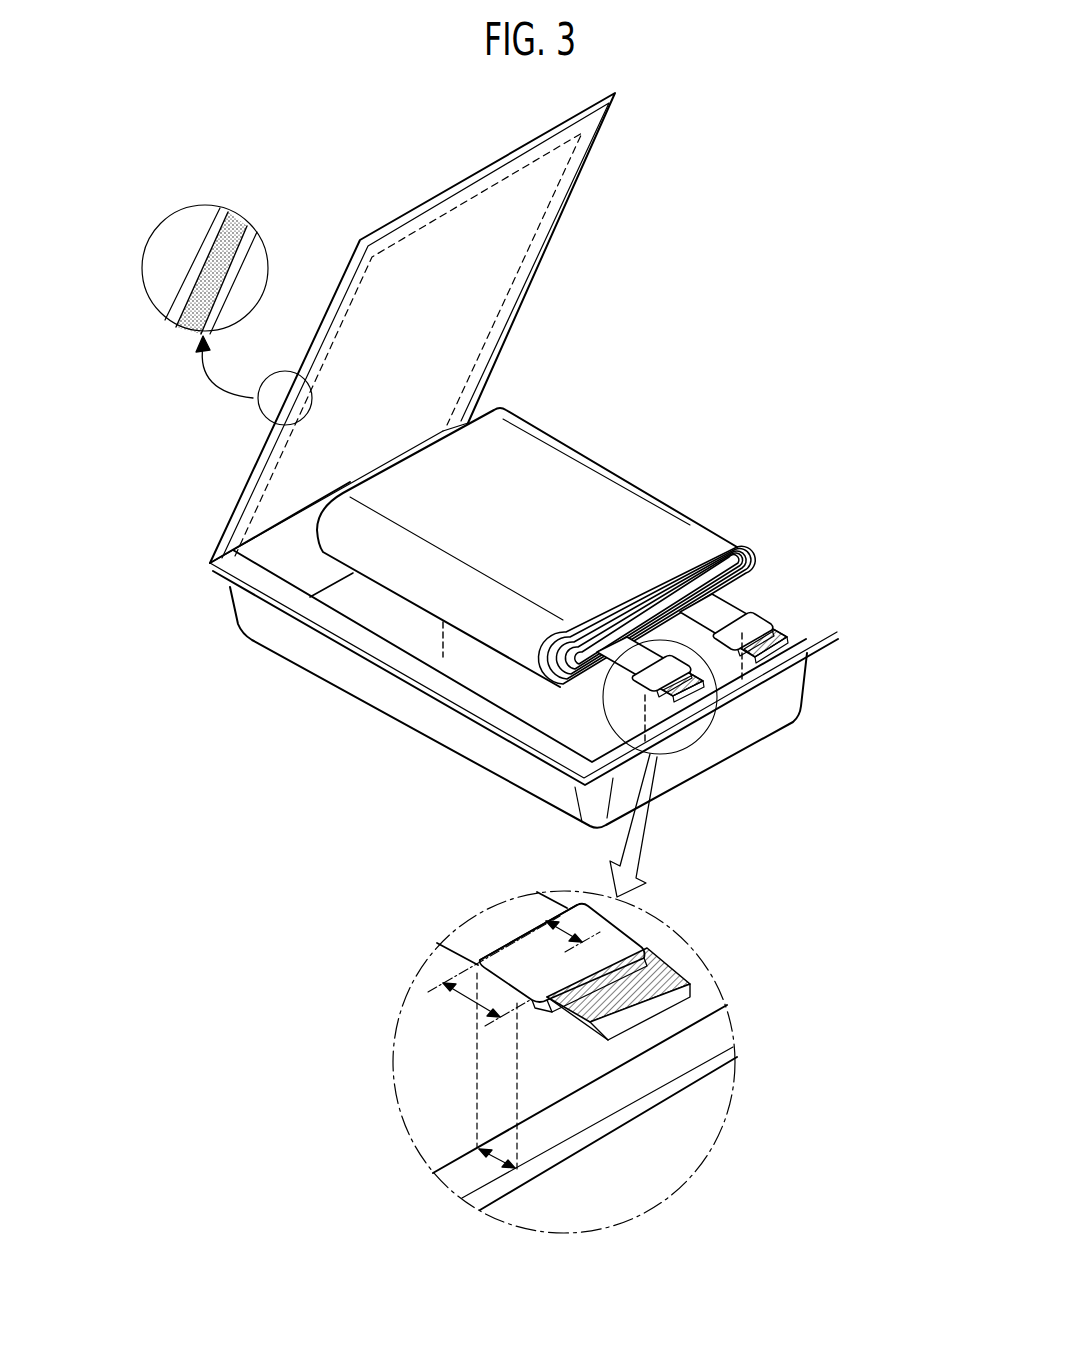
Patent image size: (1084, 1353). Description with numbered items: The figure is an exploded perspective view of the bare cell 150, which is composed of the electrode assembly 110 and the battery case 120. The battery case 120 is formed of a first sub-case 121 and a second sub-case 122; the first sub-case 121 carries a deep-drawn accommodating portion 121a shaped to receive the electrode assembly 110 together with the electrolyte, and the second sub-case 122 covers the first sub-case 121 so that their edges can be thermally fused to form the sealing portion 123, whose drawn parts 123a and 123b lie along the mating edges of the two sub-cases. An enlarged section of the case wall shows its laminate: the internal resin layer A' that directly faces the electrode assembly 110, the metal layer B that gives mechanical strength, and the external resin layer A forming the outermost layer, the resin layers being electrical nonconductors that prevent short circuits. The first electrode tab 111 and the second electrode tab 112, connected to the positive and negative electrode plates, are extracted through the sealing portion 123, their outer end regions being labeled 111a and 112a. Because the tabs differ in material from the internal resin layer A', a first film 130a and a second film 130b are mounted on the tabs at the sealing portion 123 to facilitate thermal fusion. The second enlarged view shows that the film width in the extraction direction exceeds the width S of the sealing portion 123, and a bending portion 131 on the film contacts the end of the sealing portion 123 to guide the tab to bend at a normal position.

The bare cell 150 is at (787, 208).
The electrode assembly 110 is at (645, 466).
The first electrode tab 111 is at (714, 740).
The end portion of first electrode tab 111a is at (712, 688).
The second electrode tab 112 is at (796, 648).
The end portion of second electrode tab 112a is at (806, 647).
The battery case 120 is at (464, 633).
The first sub-case 121 is at (433, 748).
The accommodating portion 121a is at (566, 715).
The second sub-case 122 is at (268, 449).
The sealing portion 123 is at (464, 608).
The first sealing part of case body 123a is at (313, 612).
The second sealing part of cover 123b is at (283, 497).
The first film 130a is at (625, 683).
The second film 130b is at (757, 617).
The bending portion 131 is at (585, 915).
The external resin layer A is at (242, 176).
The metal layer B is at (249, 219).
The internal resin layer A' is at (286, 207).
The width of the sealing portion S is at (492, 1158).